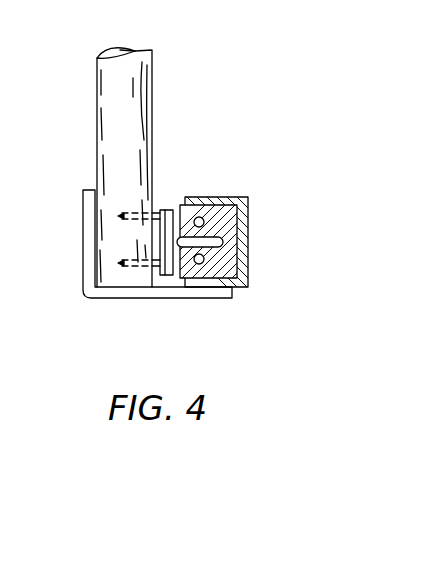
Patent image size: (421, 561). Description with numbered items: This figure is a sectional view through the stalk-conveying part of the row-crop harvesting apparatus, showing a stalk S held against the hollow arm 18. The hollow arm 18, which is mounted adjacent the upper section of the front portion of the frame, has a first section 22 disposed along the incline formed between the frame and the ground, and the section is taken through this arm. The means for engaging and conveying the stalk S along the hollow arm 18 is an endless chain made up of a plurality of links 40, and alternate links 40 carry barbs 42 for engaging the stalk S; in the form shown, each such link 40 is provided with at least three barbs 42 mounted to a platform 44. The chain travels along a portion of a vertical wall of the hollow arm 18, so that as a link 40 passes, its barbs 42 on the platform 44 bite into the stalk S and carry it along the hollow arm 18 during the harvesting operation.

The stalk S is at (113, 58).
The hollow arm 18 is at (95, 237).
The first section 22 is at (243, 248).
The link 40 is at (200, 218).
The barb 42 is at (132, 212).
The platform 44 is at (171, 210).